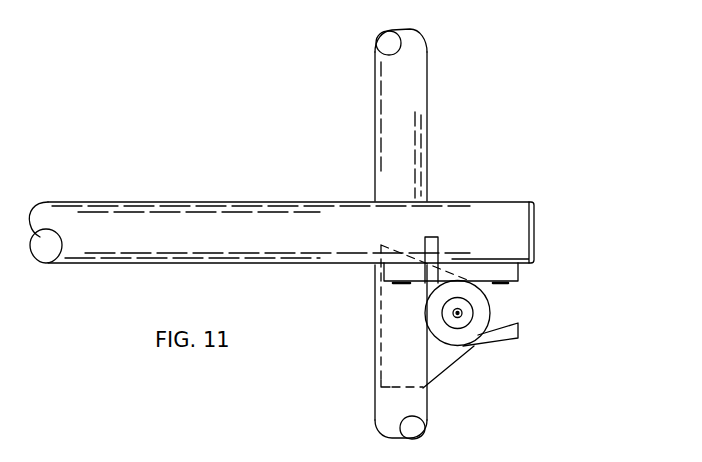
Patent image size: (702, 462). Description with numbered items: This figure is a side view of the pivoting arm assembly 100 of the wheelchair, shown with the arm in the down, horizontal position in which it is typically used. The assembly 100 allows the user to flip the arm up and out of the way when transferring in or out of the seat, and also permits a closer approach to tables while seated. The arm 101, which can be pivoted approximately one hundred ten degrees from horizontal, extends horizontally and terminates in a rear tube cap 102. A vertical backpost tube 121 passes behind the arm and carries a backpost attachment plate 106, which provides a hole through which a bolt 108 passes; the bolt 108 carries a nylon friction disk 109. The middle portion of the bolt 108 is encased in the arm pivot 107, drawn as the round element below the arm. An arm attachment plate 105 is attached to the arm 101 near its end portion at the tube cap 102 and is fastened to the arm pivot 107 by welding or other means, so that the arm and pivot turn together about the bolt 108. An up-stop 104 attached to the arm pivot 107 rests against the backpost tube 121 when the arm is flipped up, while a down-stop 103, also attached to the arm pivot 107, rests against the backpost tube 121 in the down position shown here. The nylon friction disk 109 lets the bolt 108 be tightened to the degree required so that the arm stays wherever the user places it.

The pivoting arm assembly 100 is at (316, 308).
The arm 101 is at (302, 232).
The rear tube cap 102 is at (535, 237).
The down-stop 103 is at (430, 237).
The up-stop 104 is at (497, 342).
The arm attachment plate 105 is at (468, 275).
The backpost attachment plate 106 is at (438, 362).
The arm pivot 107 is at (492, 302).
The bolt 108 is at (473, 314).
The nylon friction disk 109 is at (492, 307).
The vertical backpost tube 121 is at (398, 100).